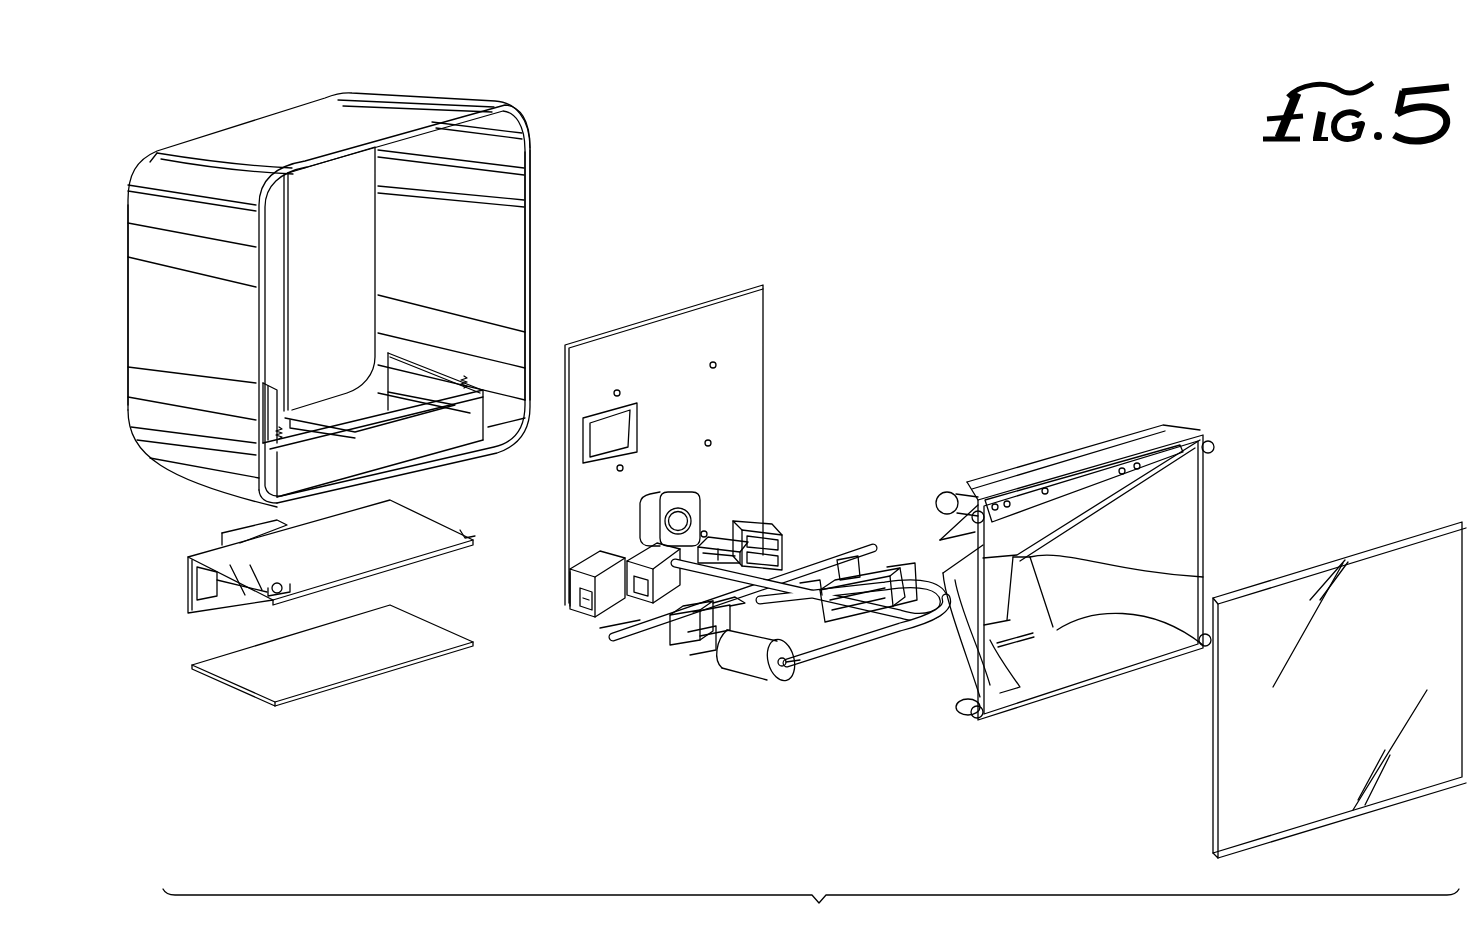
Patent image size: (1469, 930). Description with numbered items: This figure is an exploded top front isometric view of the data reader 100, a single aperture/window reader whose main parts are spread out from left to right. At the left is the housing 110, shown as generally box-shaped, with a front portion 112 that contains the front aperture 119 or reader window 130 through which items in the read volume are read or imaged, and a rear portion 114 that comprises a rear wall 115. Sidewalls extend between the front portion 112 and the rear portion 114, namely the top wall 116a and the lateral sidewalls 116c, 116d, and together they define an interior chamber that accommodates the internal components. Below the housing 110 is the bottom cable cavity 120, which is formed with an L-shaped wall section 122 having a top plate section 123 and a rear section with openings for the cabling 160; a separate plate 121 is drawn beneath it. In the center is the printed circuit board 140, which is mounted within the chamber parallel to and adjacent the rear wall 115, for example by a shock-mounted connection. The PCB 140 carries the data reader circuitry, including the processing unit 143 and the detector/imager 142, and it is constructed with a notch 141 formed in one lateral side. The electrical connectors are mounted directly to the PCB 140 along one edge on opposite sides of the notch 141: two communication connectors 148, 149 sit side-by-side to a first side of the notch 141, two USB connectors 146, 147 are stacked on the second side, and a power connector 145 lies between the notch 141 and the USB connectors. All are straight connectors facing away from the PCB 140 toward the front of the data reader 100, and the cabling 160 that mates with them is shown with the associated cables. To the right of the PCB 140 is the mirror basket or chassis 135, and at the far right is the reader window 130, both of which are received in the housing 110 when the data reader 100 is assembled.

The data reader 100 is at (1102, 220).
The housing 110 is at (416, 96).
The front portion 112 is at (531, 215).
The rear portion 114 is at (127, 323).
The rear wall 115 is at (325, 225).
The top wall 116a is at (262, 130).
The lateral sidewall 116c is at (197, 360).
The lateral sidewall 116d is at (460, 240).
The front aperture 119 is at (522, 262).
The cable cavity 120 is at (392, 395).
The bottom plate 121 is at (237, 687).
The L-shaped wall section 122 is at (185, 588).
The top plate section 123 is at (393, 532).
The reader window 130 is at (1417, 587).
The mirror basket or chassis 135 is at (1123, 443).
The printed circuit board 140 is at (664, 308).
The notch 141 is at (670, 570).
The detector/imager 142 is at (667, 493).
The processing unit 143 is at (603, 412).
The power connector 145 is at (720, 520).
The USB connector 146 is at (773, 523).
The USB connector 147 is at (797, 553).
The communication connector 148 is at (623, 555).
The communication connector 149 is at (590, 585).
The cabling 160 is at (740, 712).